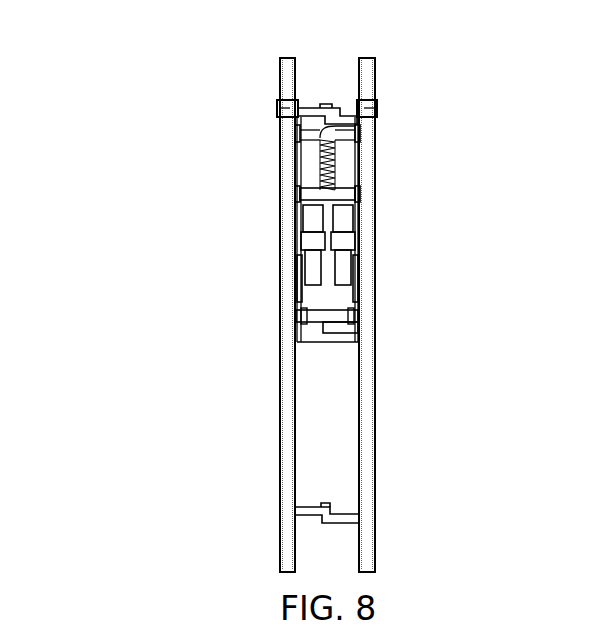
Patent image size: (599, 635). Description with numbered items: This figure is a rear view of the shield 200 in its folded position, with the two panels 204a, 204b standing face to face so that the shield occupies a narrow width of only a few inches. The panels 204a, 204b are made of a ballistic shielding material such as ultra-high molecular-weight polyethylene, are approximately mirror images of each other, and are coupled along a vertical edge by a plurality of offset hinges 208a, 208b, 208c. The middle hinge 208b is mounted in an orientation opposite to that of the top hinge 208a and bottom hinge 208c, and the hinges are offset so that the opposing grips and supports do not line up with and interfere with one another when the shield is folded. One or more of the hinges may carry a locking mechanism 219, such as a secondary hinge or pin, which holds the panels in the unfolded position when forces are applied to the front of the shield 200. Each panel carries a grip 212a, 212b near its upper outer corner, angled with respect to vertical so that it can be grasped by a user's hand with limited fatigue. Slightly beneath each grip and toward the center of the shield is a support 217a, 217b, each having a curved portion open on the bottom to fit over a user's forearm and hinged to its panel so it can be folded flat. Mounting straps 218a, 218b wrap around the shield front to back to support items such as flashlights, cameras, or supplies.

The shield 200 is at (163, 38).
The panel 204a is at (280, 563).
The panel 204b is at (375, 556).
The offset hinge 208a is at (350, 121).
The offset hinge 208b is at (352, 330).
The offset hinge 208c is at (325, 505).
The grip 212a is at (356, 133).
The grip 212b is at (298, 133).
The support 217a is at (353, 236).
The support 217b is at (302, 226).
The mounting strap 218a is at (368, 108).
The mounting strap 218b is at (290, 108).
The locking mechanism 219 is at (358, 316).